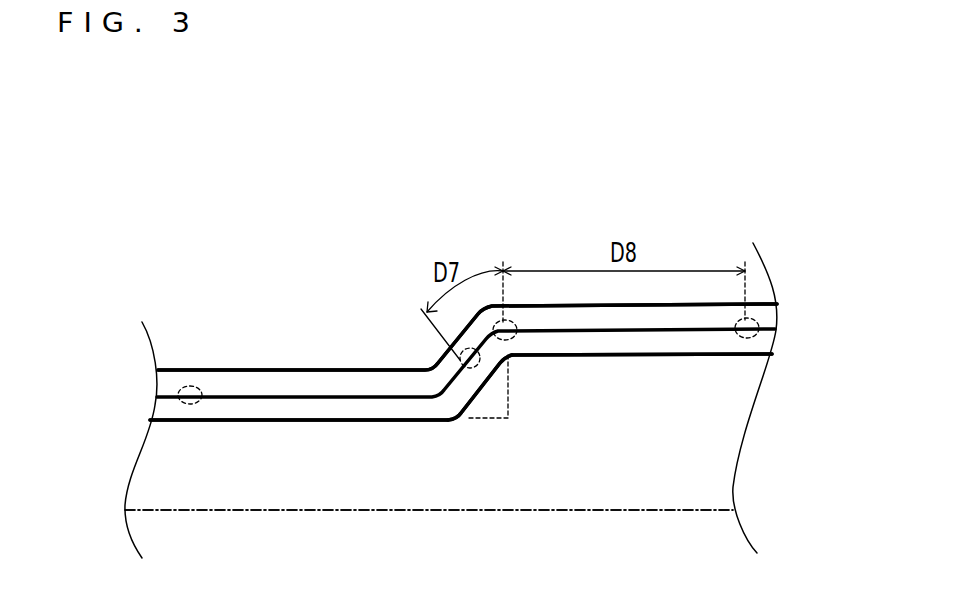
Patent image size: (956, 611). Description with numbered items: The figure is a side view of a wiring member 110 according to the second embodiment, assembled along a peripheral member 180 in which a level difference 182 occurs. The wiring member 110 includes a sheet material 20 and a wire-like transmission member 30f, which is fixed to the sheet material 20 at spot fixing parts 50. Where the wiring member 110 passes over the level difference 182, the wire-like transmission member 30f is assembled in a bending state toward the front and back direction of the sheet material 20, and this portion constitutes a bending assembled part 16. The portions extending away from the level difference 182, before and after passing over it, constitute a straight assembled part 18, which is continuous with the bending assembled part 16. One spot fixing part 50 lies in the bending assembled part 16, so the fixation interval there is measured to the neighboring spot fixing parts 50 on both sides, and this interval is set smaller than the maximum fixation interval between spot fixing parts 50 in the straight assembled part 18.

The wiring member 110 is at (150, 167).
The sheet material 20 is at (167, 407).
The wire-like transmission member 30f is at (163, 381).
The straight assembled part 18 is at (250, 423).
The bending assembled part 16 is at (465, 422).
The peripheral member 180 is at (305, 512).
The level difference 182 is at (497, 412).
The spot fixing part 50 is at (188, 385).